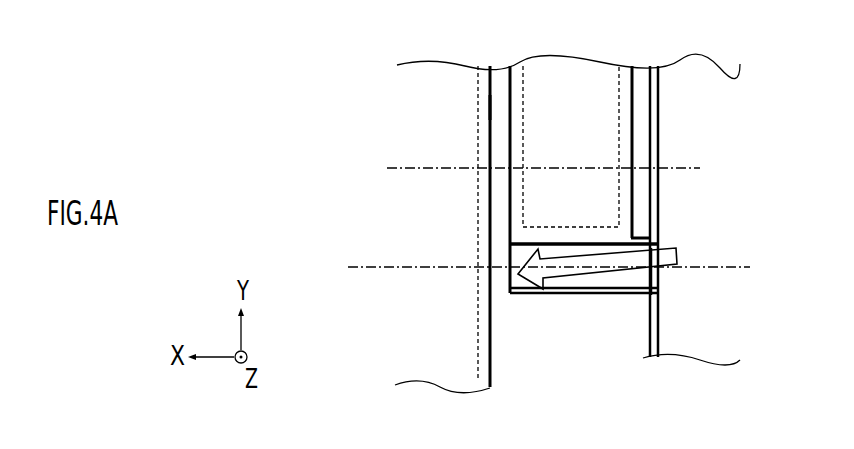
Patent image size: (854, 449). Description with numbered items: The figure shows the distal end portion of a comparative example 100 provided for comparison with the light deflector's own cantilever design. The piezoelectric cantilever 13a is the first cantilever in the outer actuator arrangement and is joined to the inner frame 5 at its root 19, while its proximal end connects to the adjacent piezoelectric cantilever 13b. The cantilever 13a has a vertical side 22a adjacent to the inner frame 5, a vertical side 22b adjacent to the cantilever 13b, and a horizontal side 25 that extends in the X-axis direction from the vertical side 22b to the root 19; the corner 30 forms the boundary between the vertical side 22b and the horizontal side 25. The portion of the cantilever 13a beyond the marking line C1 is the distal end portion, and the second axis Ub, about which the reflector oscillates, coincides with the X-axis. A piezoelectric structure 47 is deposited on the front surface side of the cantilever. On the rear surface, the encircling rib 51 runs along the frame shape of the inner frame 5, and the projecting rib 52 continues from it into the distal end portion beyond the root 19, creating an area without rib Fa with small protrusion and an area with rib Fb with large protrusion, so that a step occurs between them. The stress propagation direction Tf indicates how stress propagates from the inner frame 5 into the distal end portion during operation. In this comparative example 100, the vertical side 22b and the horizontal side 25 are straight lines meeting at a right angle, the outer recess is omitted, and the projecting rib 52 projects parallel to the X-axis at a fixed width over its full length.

The comparative example 100 is at (281, 116).
The inner frame 5 is at (705, 46).
The piezoelectric cantilever 13a is at (571, 45).
The piezoelectric cantilever 13b is at (434, 44).
The piezoelectric structure 47 is at (491, 107).
The vertical side 22a is at (634, 125).
The vertical side 22b is at (508, 142).
The encircling rib 51 is at (700, 152).
The marking line C1 is at (398, 167).
The second axis Ub is at (372, 264).
The corner 30 is at (490, 293).
The root 19 is at (650, 273).
The area without rib Fa is at (570, 213).
The stress propagation direction Tf is at (583, 263).
The projecting rib 52 is at (622, 293).
The horizontal side 25 is at (566, 295).
The area with rib Fb is at (605, 275).